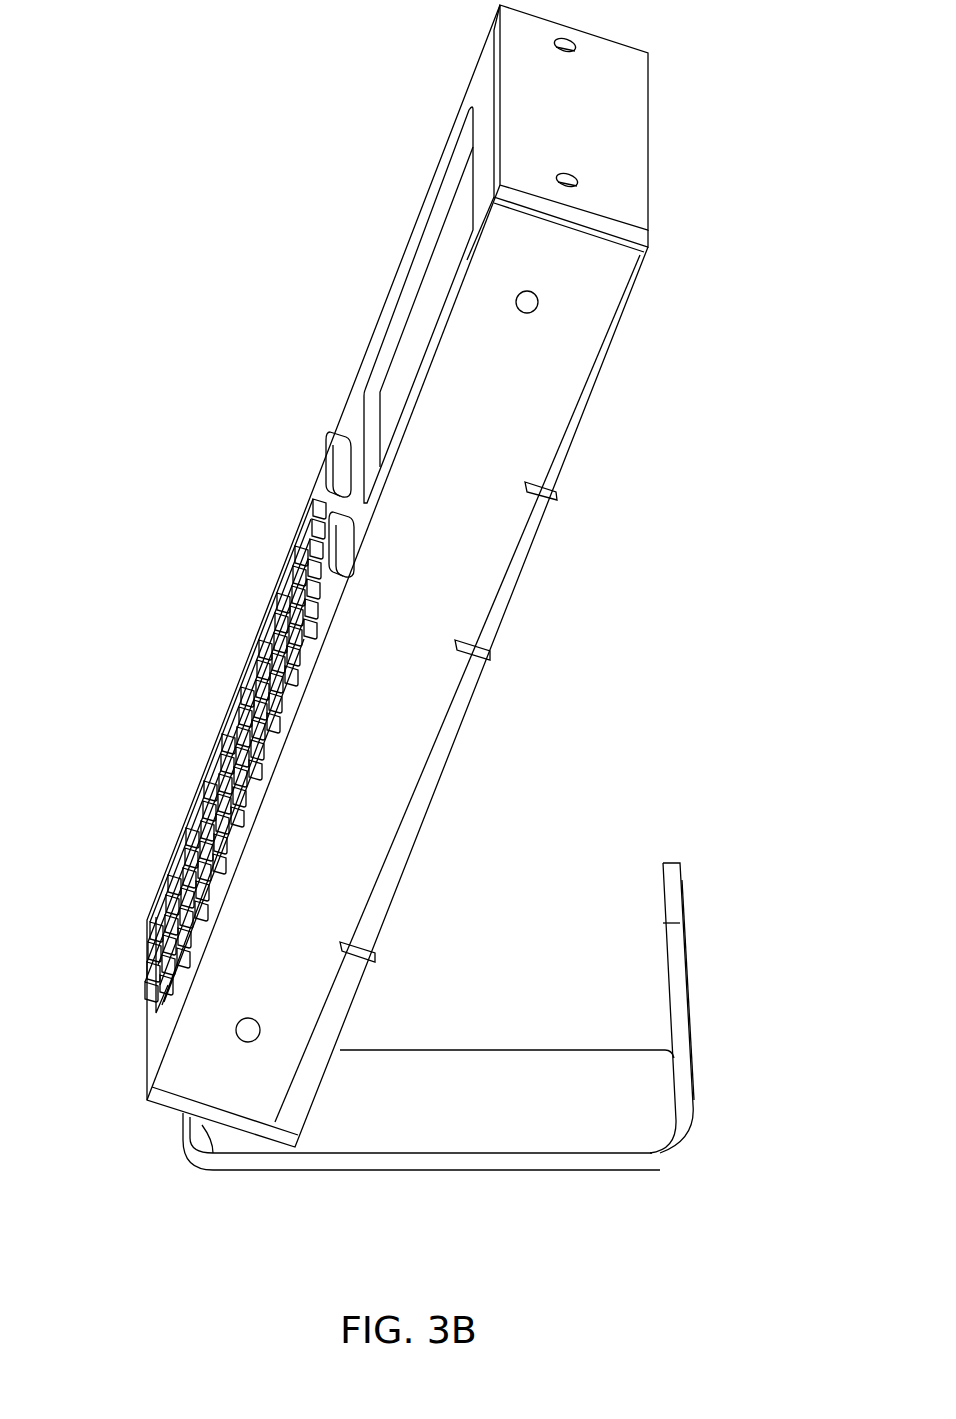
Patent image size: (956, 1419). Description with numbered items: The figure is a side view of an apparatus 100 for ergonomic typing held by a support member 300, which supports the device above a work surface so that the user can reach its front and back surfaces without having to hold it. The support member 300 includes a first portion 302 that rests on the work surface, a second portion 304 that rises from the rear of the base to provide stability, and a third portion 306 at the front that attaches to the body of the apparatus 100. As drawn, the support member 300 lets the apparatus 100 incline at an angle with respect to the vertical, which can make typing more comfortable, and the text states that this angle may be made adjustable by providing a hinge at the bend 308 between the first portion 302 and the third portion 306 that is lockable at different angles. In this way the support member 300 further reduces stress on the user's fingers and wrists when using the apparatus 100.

The apparatus 100 is at (240, 430).
The support member 300 is at (431, 1064).
The first portion 302 is at (562, 1170).
The second portion 304 is at (692, 980).
The third portion 306 is at (183, 1122).
The bend 308 is at (188, 1157).